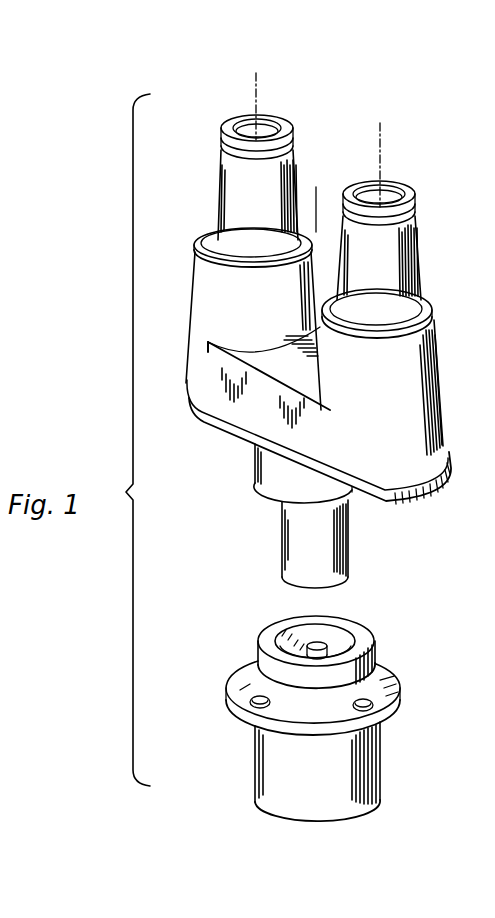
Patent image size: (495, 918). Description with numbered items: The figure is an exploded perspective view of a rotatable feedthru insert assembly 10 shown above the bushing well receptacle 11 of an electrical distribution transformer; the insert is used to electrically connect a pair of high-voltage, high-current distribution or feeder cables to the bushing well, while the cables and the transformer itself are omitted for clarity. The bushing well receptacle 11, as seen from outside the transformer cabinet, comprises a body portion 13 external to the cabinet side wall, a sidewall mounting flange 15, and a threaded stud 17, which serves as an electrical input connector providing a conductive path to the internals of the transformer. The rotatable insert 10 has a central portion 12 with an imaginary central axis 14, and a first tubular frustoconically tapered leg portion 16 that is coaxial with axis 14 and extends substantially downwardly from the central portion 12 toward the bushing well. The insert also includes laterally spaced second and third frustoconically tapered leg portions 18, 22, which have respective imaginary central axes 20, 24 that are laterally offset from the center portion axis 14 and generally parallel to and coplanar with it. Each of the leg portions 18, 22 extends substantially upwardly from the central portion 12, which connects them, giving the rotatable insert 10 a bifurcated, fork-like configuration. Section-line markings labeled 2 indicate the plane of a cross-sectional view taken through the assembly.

The section line 2- 2 is at (186, 118).
The rotatable feedthru insert assembly 10 is at (232, 457).
The bushing well receptacle 11 is at (236, 734).
The central portion 12 is at (268, 402).
The body portion 13 is at (381, 664).
The central axis 14 is at (316, 208).
The sidewall mounting flange 15 is at (393, 706).
The first tubular frustoconically tapered leg portion 16 is at (346, 538).
The threaded stud 17 is at (328, 644).
The second frustoconically tapered leg portion 18 is at (388, 299).
The central axis 20 is at (381, 166).
The third frustoconically tapered leg portion 22 is at (222, 188).
The central axis 24 is at (258, 95).